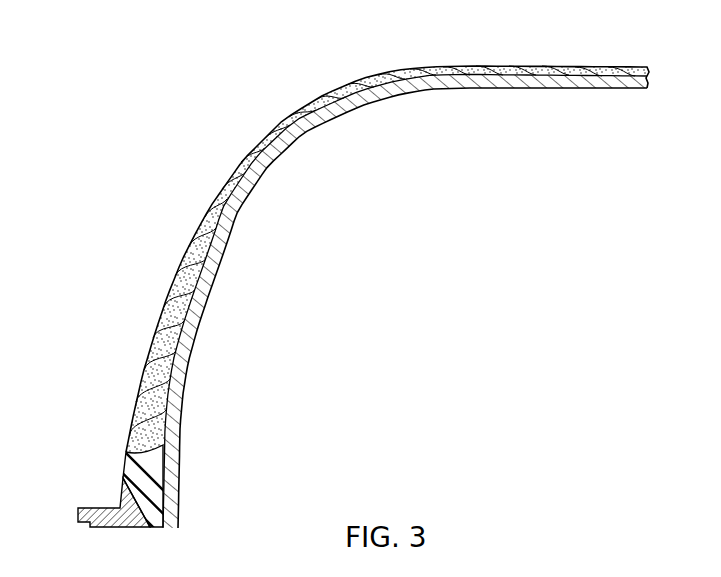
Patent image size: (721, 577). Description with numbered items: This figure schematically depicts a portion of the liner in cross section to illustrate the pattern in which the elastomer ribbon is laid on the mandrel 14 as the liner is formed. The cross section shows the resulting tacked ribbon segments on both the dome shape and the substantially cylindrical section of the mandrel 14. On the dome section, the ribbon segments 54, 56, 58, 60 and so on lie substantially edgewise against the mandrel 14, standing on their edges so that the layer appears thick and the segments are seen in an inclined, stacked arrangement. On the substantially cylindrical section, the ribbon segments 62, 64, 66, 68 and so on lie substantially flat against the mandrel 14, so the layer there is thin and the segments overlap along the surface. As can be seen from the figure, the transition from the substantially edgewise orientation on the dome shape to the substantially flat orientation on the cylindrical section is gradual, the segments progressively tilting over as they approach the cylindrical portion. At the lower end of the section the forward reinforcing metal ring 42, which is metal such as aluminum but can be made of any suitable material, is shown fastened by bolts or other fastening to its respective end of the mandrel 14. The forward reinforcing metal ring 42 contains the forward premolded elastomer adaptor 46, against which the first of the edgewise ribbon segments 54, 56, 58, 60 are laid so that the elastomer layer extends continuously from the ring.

The mandrel 14 is at (226, 238).
The forward reinforcing metal ring 42 is at (82, 523).
The forward premolded elastomer adaptor 46 is at (135, 473).
The ribbon segment 54 is at (163, 440).
The ribbon segment 56 is at (158, 420).
The ribbon segment 58 is at (168, 399).
The ribbon segment 60 is at (180, 377).
The ribbon segment 62 is at (520, 70).
The ribbon segment 64 is at (558, 73).
The ribbon segment 66 is at (598, 72).
The ribbon segment 68 is at (637, 72).